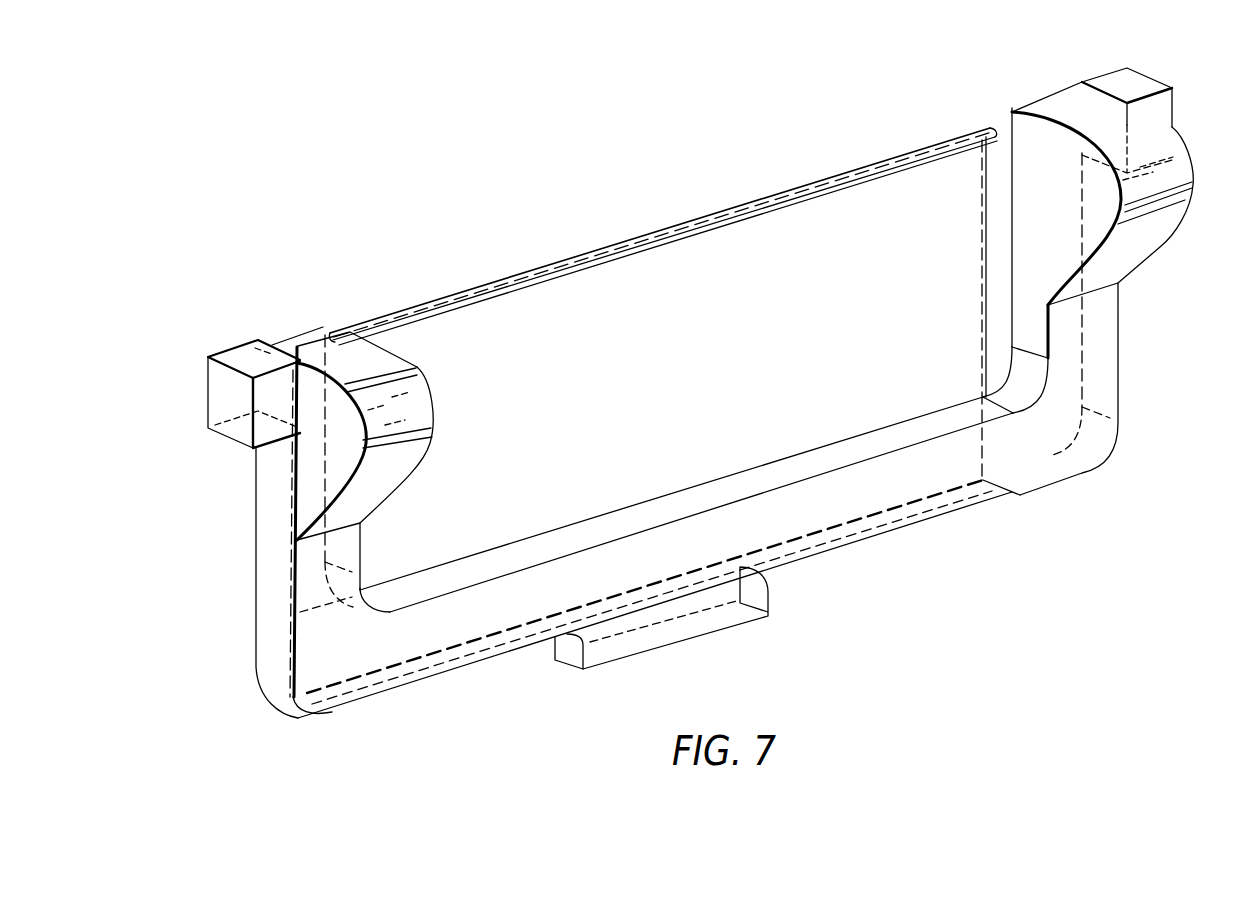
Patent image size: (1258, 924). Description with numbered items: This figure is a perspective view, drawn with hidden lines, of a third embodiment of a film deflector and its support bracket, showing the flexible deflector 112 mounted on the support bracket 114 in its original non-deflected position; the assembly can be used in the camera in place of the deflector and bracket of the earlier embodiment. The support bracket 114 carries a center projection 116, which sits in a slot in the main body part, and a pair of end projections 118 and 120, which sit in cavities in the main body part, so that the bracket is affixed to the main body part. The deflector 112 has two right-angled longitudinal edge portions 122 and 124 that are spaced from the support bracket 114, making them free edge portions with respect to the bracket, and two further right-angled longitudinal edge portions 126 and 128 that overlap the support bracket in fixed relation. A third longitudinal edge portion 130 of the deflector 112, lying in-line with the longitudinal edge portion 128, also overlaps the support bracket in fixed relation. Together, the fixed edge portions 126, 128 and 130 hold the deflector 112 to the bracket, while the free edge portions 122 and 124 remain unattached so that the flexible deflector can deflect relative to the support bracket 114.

The flexible deflector 112 is at (574, 394).
The support bracket 114 is at (913, 483).
The center projection 116 is at (680, 607).
The end projection 118 is at (210, 368).
The end projection 120 is at (1152, 80).
The right-angled longitudinal edge portion 122 is at (842, 170).
The right-angled longitudinal edge portion 124 is at (990, 252).
The right-angled longitudinal edge portion 126 is at (292, 487).
The right-angled longitudinal edge portion 128 is at (412, 668).
The third longitudinal edge portion 130 is at (843, 553).